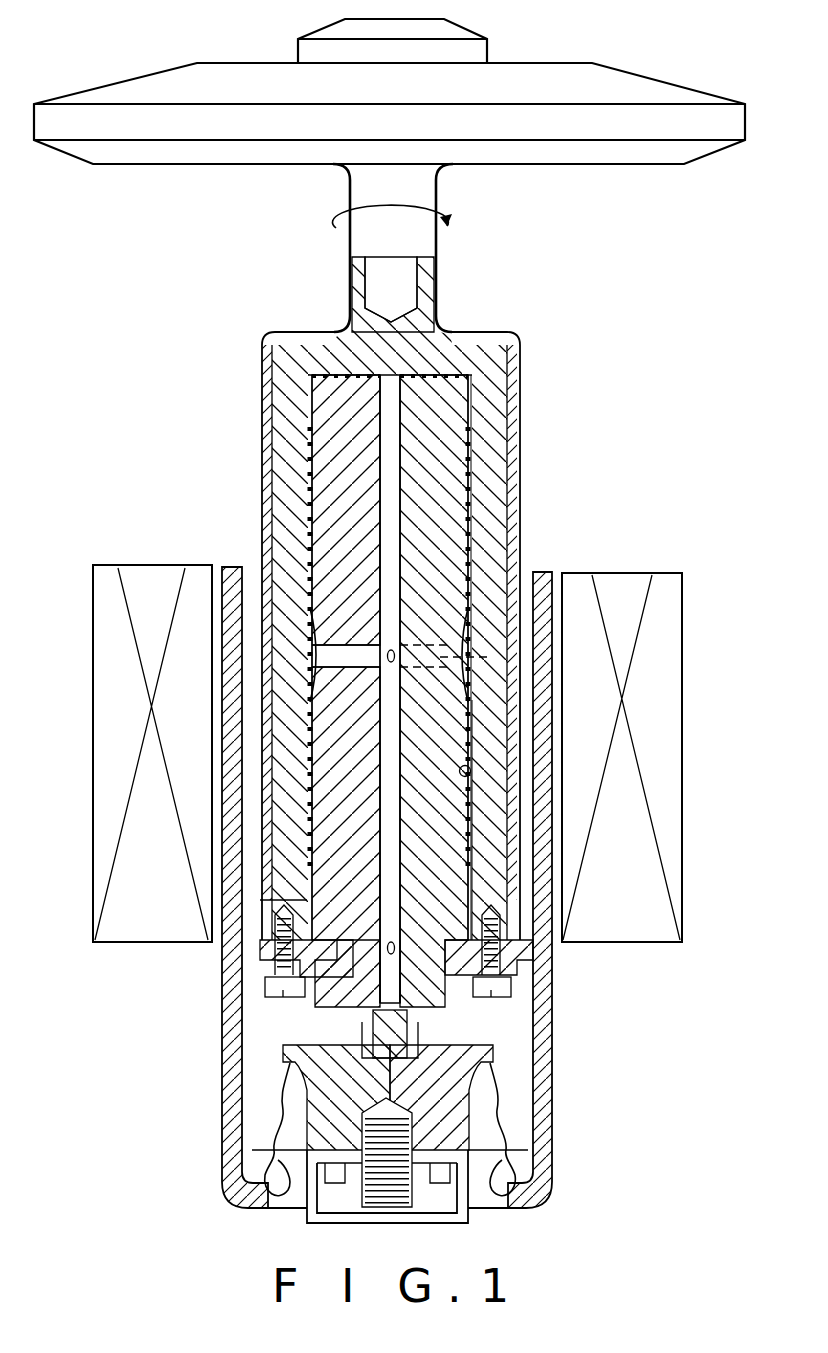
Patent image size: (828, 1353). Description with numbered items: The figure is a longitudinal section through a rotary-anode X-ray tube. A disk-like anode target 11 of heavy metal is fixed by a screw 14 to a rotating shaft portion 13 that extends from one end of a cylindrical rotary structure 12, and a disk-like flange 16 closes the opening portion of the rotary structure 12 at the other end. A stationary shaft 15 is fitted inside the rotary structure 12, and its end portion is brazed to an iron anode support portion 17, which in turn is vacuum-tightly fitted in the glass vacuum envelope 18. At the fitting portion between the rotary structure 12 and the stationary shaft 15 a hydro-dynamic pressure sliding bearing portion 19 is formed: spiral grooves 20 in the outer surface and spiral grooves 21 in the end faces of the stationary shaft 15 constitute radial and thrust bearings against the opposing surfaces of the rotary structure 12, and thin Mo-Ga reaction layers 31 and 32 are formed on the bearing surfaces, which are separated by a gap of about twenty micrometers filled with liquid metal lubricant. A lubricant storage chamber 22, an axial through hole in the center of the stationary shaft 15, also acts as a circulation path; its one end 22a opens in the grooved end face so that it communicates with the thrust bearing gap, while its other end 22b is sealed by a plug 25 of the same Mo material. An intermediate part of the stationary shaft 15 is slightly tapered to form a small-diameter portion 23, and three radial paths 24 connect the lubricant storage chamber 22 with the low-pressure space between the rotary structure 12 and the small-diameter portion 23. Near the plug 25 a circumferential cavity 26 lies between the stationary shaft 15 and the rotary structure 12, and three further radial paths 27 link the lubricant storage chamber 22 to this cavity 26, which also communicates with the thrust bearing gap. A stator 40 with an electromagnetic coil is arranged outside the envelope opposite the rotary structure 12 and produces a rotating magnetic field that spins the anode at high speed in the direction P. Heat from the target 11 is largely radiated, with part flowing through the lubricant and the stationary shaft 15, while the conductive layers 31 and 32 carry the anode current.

The anode target 11 is at (569, 82).
The cylindrical rotary structure 12 is at (493, 410).
The rotating shaft portion 13 is at (364, 238).
The screw 14 is at (330, 45).
The stationary shaft 15 is at (440, 468).
The disk-like flange 16 is at (480, 968).
The anode support portion 17 is at (430, 1098).
The glass vacuum envelope 18 is at (543, 1056).
The hydro-dynamic pressure sliding bearing portion 19 is at (480, 538).
The spiral grooves 20 is at (313, 478).
The spiral grooves 21 is at (330, 393).
The lubricant storage chamber 22 is at (394, 735).
The one end of lubricant storage chamber 22a is at (392, 380).
The other end of lubricant storage chamber 22b is at (388, 1003).
The small-diameter portion 23 is at (313, 633).
The radial paths 24 is at (332, 660).
The plug 25 is at (400, 1040).
The circumferential cavity 26 is at (483, 950).
The radial paths 27 is at (283, 948).
The Mo-Ga reaction layer 31 is at (471, 772).
The Mo-Ga reaction layer 32 is at (480, 812).
The stator 40 is at (683, 666).
The rotation direction P is at (450, 214).